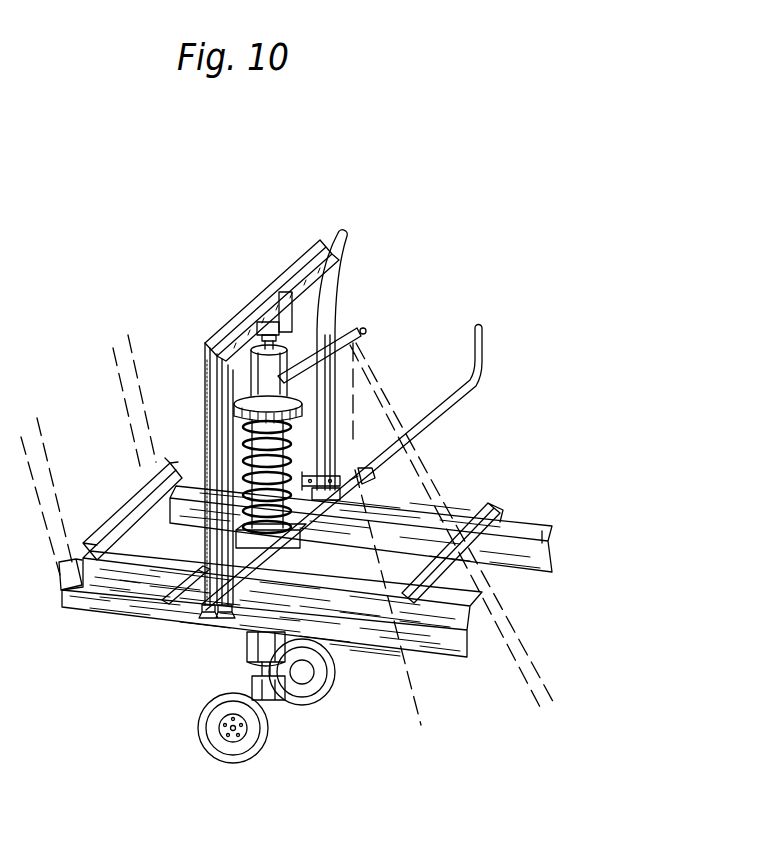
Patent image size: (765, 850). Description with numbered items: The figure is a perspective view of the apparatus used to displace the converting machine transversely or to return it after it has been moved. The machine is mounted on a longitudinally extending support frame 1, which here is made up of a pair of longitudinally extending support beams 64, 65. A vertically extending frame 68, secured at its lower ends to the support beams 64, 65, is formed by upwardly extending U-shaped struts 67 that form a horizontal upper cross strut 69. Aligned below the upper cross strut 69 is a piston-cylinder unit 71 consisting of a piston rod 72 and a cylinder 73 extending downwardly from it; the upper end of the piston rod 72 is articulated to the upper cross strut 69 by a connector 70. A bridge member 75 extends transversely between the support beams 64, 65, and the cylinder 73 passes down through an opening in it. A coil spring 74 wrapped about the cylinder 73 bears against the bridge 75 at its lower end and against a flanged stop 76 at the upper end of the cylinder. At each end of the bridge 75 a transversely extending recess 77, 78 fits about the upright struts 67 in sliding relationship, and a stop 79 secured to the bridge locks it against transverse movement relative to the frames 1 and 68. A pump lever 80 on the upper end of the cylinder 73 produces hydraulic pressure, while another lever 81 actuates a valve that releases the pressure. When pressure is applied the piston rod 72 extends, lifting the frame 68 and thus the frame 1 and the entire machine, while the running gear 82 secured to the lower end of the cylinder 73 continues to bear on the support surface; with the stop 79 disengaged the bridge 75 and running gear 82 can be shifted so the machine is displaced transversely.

The support frame 1 is at (586, 539).
The support beam 64 is at (450, 647).
The support beam 65 is at (553, 567).
The U-shaped struts 67 is at (210, 362).
The vertically extending frame 68 is at (286, 240).
The upper cross strut 69 is at (225, 330).
The connector 70 is at (293, 317).
The piston-cylinder unit 71 is at (227, 680).
The piston rod 72 is at (366, 333).
The cylinder 73 is at (247, 650).
The coil spring 74 is at (243, 457).
The bridge member 75 is at (300, 553).
The flanged stop 76 is at (295, 405).
The transversely extending recess 77 is at (187, 610).
The transversely extending recess 78 is at (350, 455).
The stop 79 is at (372, 476).
The pump lever 80 is at (345, 233).
The lever 81 is at (285, 339).
The running gear 82 is at (288, 728).